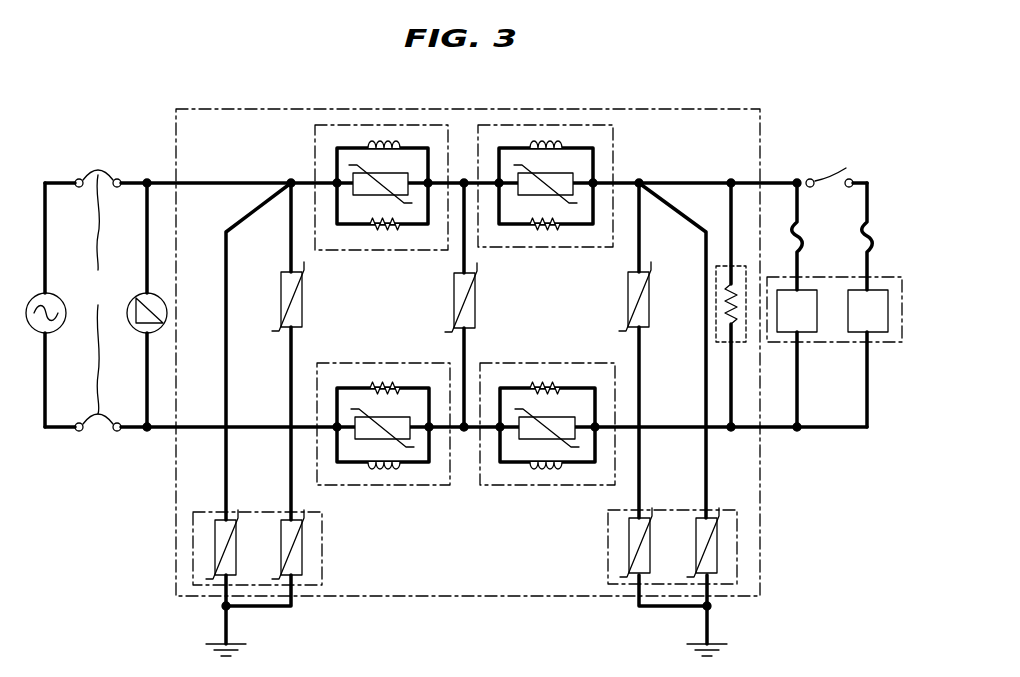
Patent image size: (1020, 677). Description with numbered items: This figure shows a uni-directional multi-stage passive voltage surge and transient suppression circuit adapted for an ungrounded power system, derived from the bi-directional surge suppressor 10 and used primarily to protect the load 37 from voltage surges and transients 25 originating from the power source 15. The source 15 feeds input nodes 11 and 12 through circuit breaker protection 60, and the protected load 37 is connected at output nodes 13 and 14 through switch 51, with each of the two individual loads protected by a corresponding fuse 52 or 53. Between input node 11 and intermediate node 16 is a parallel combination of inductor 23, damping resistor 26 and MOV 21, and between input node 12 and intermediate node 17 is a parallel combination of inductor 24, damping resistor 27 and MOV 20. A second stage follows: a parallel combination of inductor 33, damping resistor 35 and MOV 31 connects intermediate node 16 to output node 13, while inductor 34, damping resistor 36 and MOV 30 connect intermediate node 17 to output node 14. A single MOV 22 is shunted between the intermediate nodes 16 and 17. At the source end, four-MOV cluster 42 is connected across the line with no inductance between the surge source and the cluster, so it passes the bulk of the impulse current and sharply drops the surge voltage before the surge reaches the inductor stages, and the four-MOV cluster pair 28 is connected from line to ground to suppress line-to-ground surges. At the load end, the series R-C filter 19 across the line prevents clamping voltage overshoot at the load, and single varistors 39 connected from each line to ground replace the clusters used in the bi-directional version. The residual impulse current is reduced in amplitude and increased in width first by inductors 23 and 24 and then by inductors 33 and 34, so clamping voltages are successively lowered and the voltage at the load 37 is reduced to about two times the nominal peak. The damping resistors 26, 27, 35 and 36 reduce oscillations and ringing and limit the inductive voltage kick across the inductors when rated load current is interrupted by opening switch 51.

The surge suppressor 10 is at (698, 109).
The input node 11 is at (147, 180).
The input node 12 is at (147, 431).
The output node 13 is at (797, 180).
The output node 14 is at (797, 431).
The power source 15 is at (54, 292).
The intermediate node 16 is at (462, 178).
The intermediate node 17 is at (464, 431).
The series R-C filter 19 is at (716, 310).
The MOV 20 is at (354, 442).
The MOV 21 is at (362, 204).
The MOV 22 is at (453, 302).
The inductor 23 is at (398, 150).
The inductor 24 is at (388, 468).
The voltage surge 25 is at (147, 334).
The damping resistor 26 is at (388, 230).
The damping resistor 27 is at (372, 384).
The four-MOV cluster pair 28 is at (323, 545).
The MOV 30 is at (576, 425).
The MOV 31 is at (565, 187).
The inductor 33 is at (562, 150).
The inductor 34 is at (548, 468).
The damping resistor 35 is at (530, 226).
The damping resistor 36 is at (536, 384).
The load 37 is at (892, 343).
The single MOVs connected from each line to ground 39 is at (722, 510).
The MOV cluster 42 is at (280, 288).
The switch 51 is at (843, 170).
The fuse 52 is at (800, 236).
The fuse 53 is at (870, 236).
The circuit breaker protection 60 is at (98, 294).